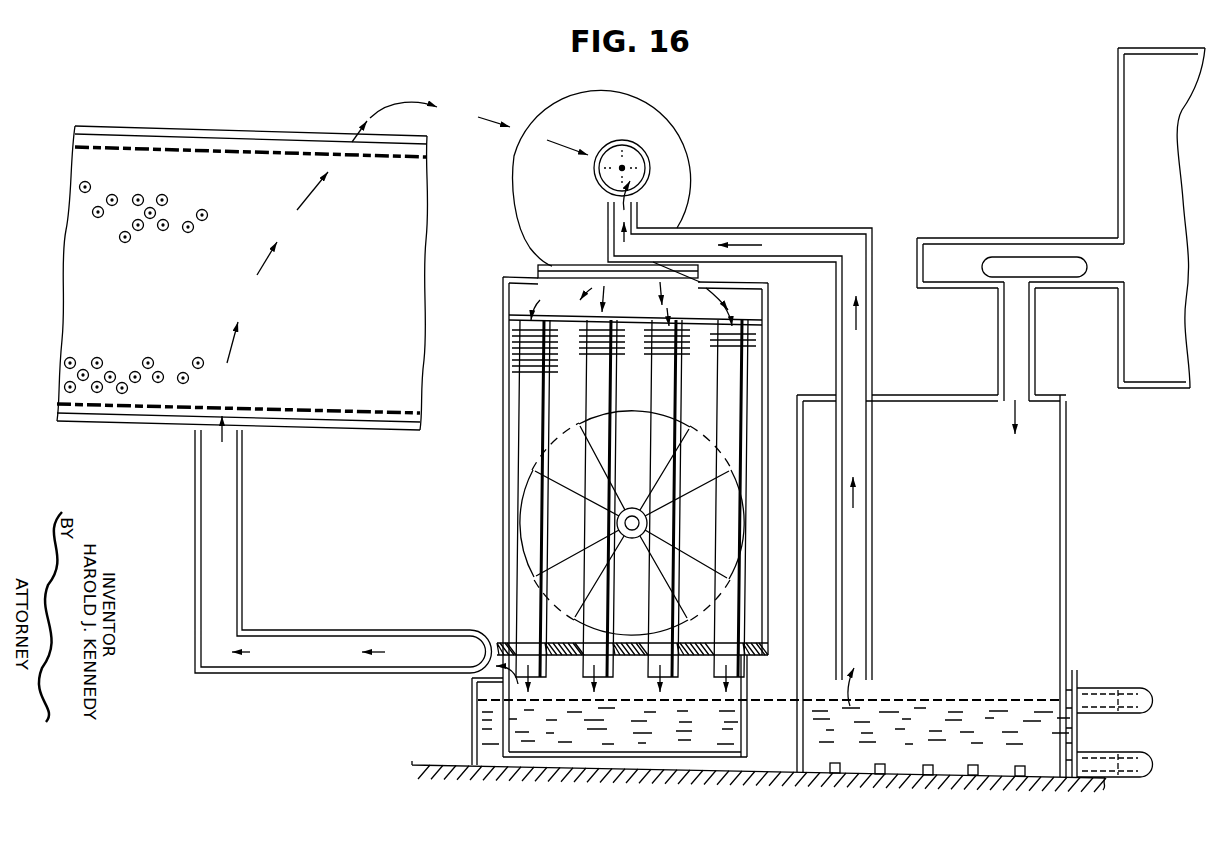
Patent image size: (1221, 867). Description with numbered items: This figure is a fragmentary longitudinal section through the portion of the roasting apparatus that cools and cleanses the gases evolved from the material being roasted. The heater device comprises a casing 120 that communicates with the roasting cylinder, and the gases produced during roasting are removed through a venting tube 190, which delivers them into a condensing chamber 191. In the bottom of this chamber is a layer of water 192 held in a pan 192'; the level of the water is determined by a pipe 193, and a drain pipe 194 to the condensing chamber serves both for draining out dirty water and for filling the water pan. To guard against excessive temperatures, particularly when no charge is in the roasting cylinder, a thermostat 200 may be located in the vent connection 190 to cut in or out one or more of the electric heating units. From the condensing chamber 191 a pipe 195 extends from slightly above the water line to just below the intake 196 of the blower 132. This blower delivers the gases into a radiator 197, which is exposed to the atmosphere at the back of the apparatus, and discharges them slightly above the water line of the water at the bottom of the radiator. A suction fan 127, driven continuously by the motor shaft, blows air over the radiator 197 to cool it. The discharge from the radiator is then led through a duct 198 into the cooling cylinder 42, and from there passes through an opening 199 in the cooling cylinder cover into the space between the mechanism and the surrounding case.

The cooling cylinder 42 is at (337, 432).
The casing 120 is at (1135, 388).
The suction fan 127 is at (637, 412).
The blower 132 is at (668, 110).
The venting tube 190 is at (1062, 323).
The condensing chamber 191 is at (931, 586).
The layer of water 192 is at (774, 708).
The pan 192' is at (1096, 723).
The pipe 193 is at (1135, 687).
The drain pipe 194 is at (1127, 754).
The pipe 195 is at (858, 358).
The intake 196 is at (648, 170).
The radiator 197 is at (732, 388).
The duct 198 is at (385, 630).
The opening 199 is at (345, 134).
The thermostat 200 is at (1022, 257).